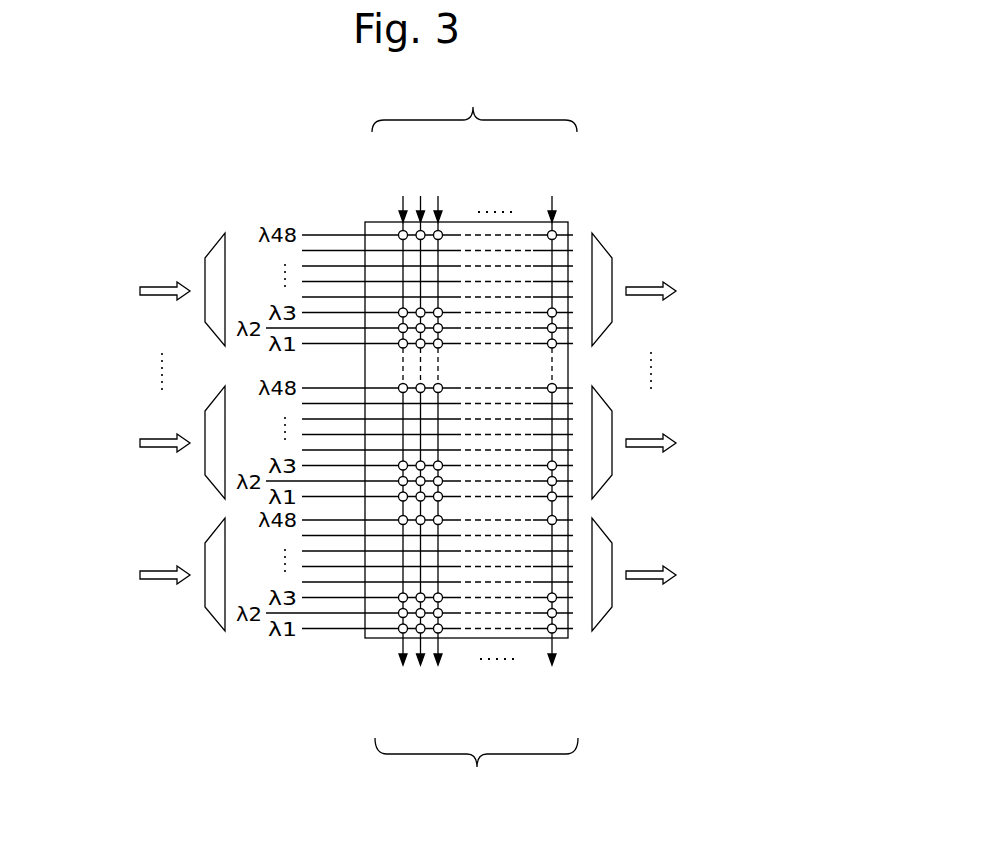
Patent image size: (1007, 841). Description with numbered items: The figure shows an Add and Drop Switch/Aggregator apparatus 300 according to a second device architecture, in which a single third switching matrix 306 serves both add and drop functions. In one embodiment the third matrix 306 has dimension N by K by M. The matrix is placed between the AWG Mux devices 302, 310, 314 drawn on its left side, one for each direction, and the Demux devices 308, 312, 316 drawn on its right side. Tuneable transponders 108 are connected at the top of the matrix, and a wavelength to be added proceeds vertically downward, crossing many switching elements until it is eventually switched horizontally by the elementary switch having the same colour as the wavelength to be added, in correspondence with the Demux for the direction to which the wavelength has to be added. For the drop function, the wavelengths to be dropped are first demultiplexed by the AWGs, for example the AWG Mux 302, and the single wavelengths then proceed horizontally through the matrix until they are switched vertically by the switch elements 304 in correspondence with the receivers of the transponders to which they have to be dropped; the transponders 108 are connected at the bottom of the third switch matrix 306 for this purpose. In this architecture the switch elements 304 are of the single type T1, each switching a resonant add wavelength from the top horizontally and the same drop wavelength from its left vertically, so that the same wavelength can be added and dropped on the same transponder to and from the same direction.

The tuneable transponders 108 is at (475, 436).
The optical switch fabric 300 is at (787, 702).
The AWG Mux 302 is at (209, 318).
The switch elements 304 is at (400, 231).
The third switching matrix 306 is at (567, 641).
The Demux 308 is at (607, 318).
The AWG Mux 310 is at (209, 471).
The Demux 312 is at (609, 470).
The AWG Mux 314 is at (209, 604).
The Demux 316 is at (609, 603).